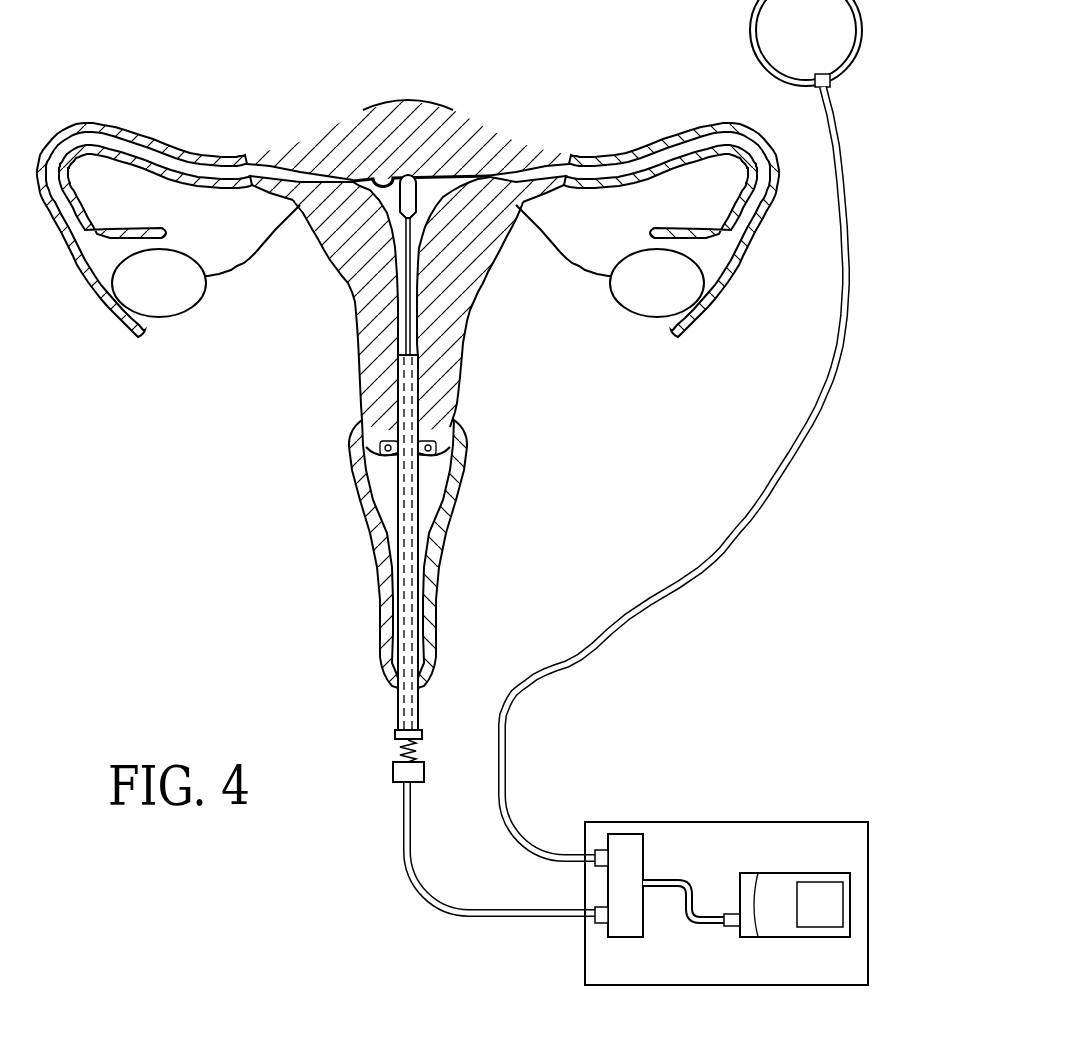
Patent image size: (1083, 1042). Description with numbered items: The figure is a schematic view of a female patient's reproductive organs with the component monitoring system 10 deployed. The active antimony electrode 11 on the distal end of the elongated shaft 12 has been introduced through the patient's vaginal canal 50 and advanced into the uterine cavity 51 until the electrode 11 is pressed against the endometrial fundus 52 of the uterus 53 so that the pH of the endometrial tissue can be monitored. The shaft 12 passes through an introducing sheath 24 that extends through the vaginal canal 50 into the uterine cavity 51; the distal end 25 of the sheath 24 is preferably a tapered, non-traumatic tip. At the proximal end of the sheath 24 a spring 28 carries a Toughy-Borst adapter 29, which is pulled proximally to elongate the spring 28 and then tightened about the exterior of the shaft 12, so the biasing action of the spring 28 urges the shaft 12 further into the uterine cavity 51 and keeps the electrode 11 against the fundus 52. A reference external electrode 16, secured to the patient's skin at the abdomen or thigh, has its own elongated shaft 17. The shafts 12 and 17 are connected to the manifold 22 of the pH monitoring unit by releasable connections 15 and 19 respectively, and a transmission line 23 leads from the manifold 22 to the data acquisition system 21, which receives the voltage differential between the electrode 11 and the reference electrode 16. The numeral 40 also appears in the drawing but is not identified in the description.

The component monitoring system 10 is at (800, 772).
The distal antimony electrode 11 is at (443, 163).
The elongated shaft 12 is at (412, 310).
The releasable connection 15 is at (597, 922).
The reference external electrode 16 is at (770, 38).
The elongated shaft 17 is at (755, 507).
The releasable connection 19 is at (600, 847).
The data acquisition system 21 is at (790, 872).
The manifold 22 is at (638, 835).
The transmission line 23 is at (692, 887).
The introducing sheath 24 is at (397, 708).
The distal end 25 is at (397, 734).
The spring 28 is at (415, 753).
The Toughy-Borst adapter 29 is at (387, 780).
The reference element 40 is at (297, 1035).
The vaginal canal 50 is at (427, 493).
The uterine cavity 51 is at (470, 173).
The endometrial fundus 52 is at (383, 177).
The uterus 53 is at (291, 143).